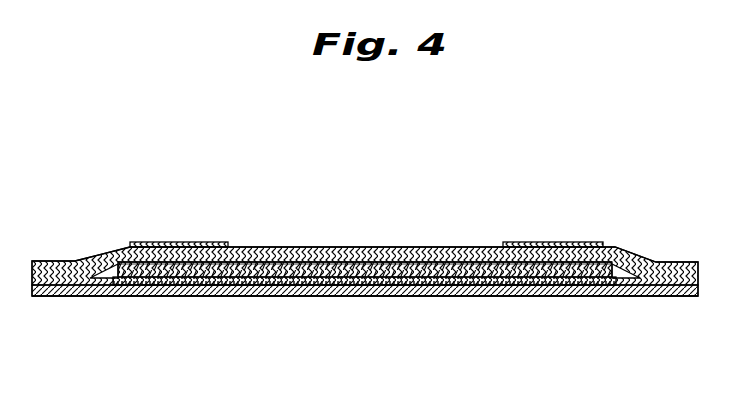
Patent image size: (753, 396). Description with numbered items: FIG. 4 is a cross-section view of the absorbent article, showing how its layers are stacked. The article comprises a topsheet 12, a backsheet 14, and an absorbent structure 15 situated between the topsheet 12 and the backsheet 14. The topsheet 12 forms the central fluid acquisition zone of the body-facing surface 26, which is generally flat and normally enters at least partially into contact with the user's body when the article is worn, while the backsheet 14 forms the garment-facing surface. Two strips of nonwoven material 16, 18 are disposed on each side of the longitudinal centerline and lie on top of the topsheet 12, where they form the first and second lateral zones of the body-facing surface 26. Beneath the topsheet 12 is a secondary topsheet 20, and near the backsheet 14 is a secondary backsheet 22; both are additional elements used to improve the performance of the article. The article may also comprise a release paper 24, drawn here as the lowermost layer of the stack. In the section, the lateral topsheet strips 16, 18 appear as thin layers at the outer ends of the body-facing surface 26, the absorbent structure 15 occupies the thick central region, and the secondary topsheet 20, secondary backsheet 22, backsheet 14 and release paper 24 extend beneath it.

The topsheet 12 is at (312, 250).
The backsheet 14 is at (330, 290).
The absorbent structure 15 is at (420, 270).
The strip of nonwoven material 16 is at (192, 242).
The strip of nonwoven material 18 is at (533, 242).
The secondary topsheet 20 is at (368, 262).
The secondary backsheet 22 is at (387, 283).
The release paper 24 is at (470, 294).
The body-facing surface 26 is at (272, 229).